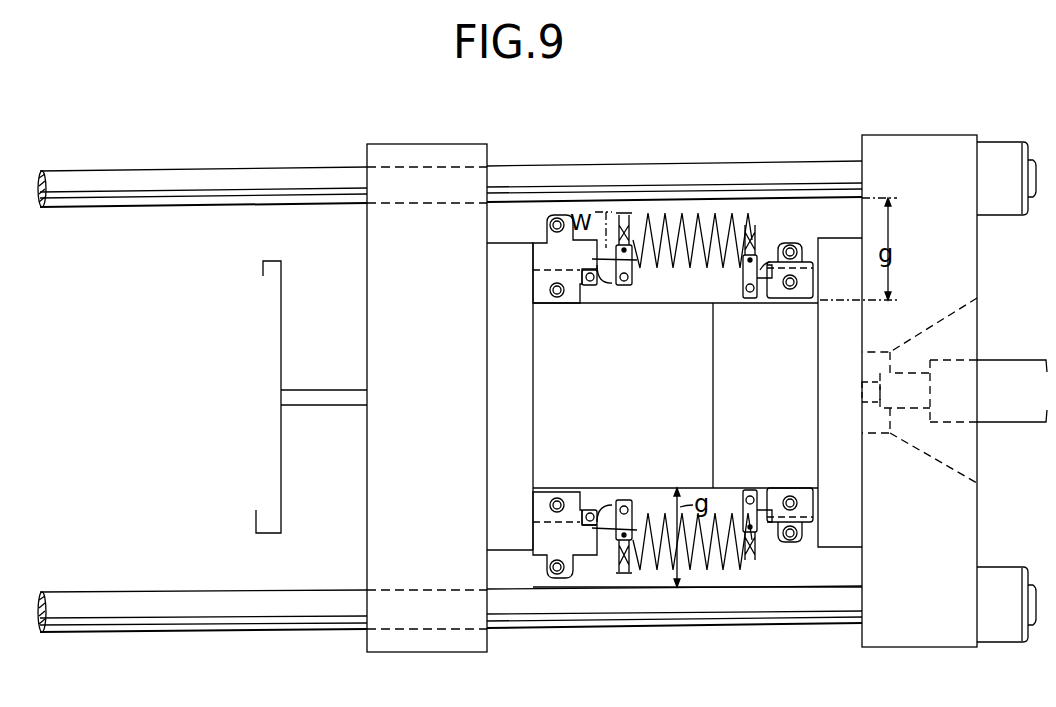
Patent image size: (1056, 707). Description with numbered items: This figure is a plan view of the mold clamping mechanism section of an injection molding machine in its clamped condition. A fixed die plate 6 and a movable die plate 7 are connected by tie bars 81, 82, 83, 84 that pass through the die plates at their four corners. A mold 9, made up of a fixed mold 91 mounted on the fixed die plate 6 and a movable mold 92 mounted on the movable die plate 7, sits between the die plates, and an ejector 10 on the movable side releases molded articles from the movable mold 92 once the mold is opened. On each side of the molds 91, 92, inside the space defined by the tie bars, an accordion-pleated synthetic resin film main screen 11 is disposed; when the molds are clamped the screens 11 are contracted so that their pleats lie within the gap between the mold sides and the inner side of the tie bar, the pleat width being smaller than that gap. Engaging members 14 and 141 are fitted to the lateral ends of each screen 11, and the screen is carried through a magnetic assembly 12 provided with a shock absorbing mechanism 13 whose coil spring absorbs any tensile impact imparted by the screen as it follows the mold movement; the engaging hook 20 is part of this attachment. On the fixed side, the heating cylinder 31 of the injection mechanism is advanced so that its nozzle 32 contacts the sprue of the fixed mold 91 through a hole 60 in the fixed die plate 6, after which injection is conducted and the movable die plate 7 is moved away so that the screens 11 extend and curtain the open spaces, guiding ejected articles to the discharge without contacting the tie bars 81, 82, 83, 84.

The fixed die plate 6 is at (928, 150).
The movable die plate 7 is at (432, 160).
The mold 9 is at (674, 335).
The fixed mold 91 is at (735, 325).
The movable mold 92 is at (668, 325).
The ejector 10 is at (335, 405).
The main screen 11 is at (697, 228).
The magnetic assembly 12 is at (807, 280).
The shock absorbing mechanism 13 is at (560, 258).
The engaging member 14 is at (711, 328).
The engaging member 141 is at (760, 225).
The hook 20 is at (768, 265).
The heating cylinder 31 is at (1020, 366).
The nozzle 32 is at (860, 395).
The hole 60 is at (930, 326).
The tie bar 81 is at (577, 600).
The tie bar 82 is at (556, 170).
The tie bar 83 is at (450, 646).
The tie bar 84 is at (450, 158).